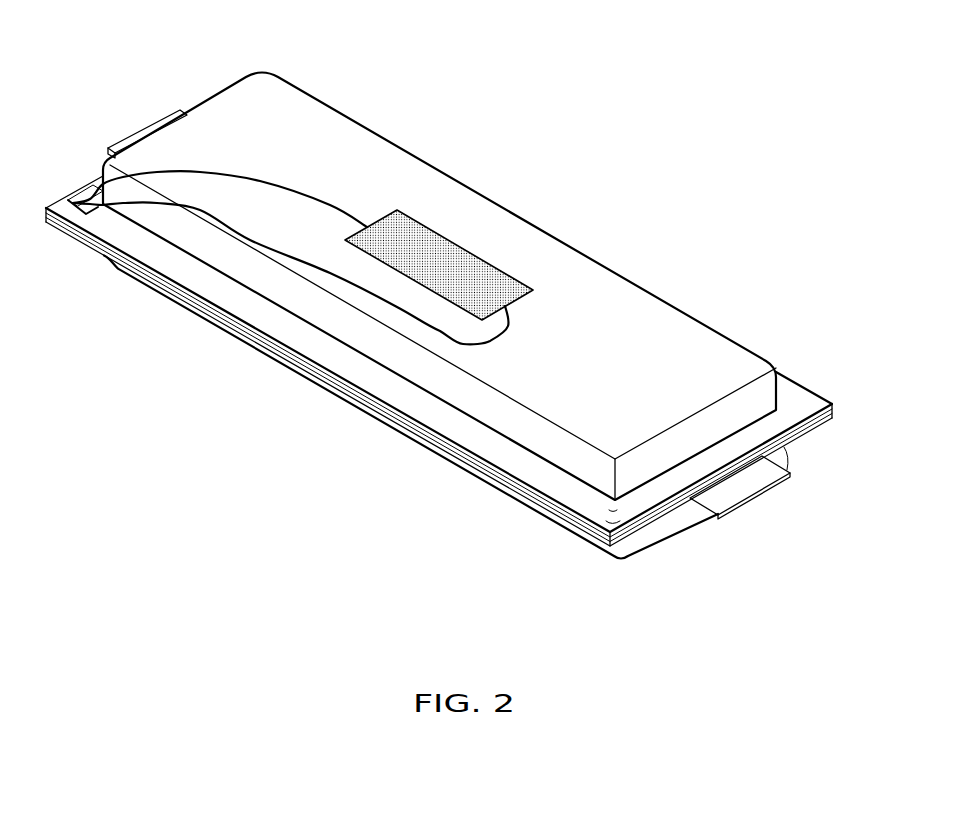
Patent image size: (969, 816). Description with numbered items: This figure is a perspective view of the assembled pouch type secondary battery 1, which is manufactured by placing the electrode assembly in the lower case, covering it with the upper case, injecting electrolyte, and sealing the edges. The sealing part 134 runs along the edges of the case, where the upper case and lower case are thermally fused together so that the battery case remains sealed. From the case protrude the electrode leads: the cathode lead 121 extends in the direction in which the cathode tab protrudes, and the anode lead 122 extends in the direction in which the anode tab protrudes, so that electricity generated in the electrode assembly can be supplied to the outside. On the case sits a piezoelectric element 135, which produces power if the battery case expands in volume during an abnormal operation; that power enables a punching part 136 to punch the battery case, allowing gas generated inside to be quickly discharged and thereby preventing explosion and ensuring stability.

The secondary battery 1 is at (553, 92).
The cathode lead 121 is at (747, 482).
The anode lead 122 is at (145, 132).
The sealing part 134 is at (793, 387).
The piezoelectric element 135 is at (460, 267).
The punching part 136 is at (92, 187).